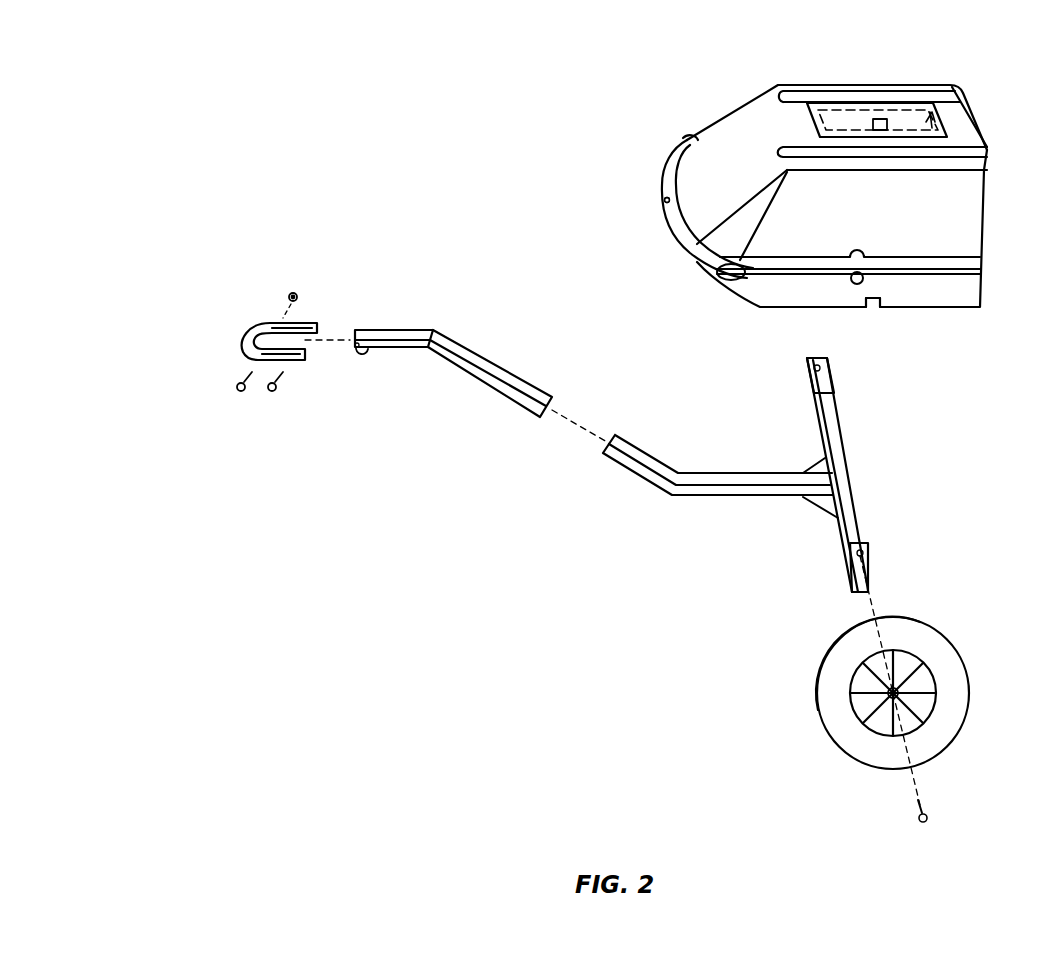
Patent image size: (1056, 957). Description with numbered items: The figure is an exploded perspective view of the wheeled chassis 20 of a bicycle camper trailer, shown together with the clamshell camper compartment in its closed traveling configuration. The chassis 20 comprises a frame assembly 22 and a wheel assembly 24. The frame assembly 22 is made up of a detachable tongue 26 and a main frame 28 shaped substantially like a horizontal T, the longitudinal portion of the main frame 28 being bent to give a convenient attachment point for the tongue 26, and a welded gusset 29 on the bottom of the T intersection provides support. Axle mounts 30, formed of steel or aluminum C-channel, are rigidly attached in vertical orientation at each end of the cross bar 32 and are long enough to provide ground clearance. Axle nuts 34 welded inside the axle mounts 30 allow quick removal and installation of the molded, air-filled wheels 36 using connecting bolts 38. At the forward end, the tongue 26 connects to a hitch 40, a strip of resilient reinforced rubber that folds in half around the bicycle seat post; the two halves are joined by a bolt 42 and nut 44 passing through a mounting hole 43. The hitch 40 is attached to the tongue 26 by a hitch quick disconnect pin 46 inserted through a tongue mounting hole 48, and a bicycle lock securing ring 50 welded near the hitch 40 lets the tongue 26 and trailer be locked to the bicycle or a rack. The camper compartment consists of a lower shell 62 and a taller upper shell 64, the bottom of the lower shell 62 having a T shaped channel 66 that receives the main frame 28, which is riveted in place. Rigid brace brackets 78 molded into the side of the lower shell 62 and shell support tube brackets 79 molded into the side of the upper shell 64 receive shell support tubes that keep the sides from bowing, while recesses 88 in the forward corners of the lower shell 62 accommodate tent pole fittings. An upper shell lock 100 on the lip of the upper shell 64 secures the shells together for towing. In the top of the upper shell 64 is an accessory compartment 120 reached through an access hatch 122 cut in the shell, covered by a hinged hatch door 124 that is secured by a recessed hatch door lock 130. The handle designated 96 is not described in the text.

The wheeled chassis 20 is at (630, 496).
The frame assembly 22 is at (527, 440).
The wheel assembly 24 is at (896, 580).
The detachable tongue 26 is at (478, 360).
The main frame 28 is at (718, 478).
The gusset 29 is at (824, 504).
The axle mounts 30 is at (832, 393).
The cross bar 32 is at (830, 437).
The axle nuts 34 is at (812, 362).
The wheels 36 is at (953, 692).
The connecting bolts 38 is at (928, 813).
The hitch 40 is at (255, 356).
The bolt 42 is at (238, 392).
The mounting hole 43 is at (264, 322).
The nut 44 is at (298, 291).
The hitch quick disconnect pin 46 is at (276, 392).
The tongue mounting hole 48 is at (353, 348).
The bicycle lock securing ring 50 is at (367, 358).
The lower shell 62 is at (958, 290).
The upper shell 64 is at (978, 205).
The T shaped channel 66 is at (874, 305).
The rigid brace brackets 78 is at (856, 284).
The shell support tube brackets 79 is at (864, 266).
The recesses 88 is at (740, 270).
The handle 96 is at (646, 182).
The upper shell lock 100 is at (664, 204).
The accessory compartment 120 is at (942, 124).
The access hatch 122 is at (838, 100).
The hatch door 124 is at (944, 95).
The hatch door lock 130 is at (880, 118).